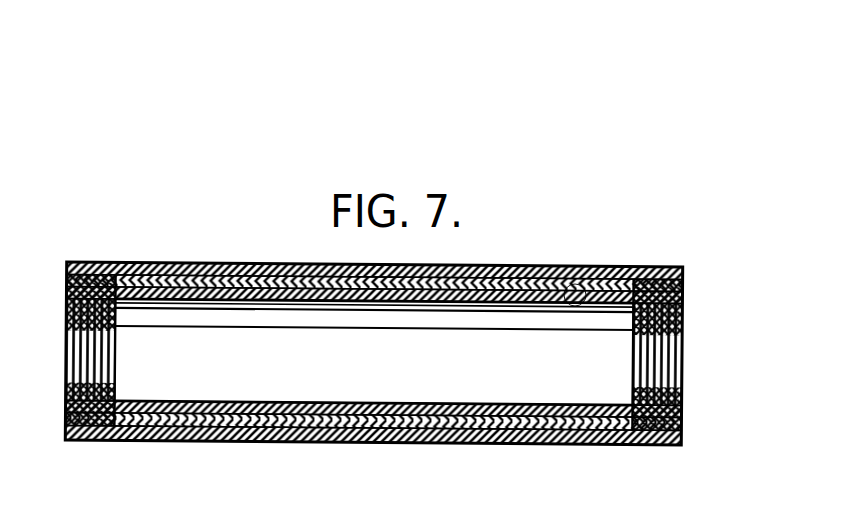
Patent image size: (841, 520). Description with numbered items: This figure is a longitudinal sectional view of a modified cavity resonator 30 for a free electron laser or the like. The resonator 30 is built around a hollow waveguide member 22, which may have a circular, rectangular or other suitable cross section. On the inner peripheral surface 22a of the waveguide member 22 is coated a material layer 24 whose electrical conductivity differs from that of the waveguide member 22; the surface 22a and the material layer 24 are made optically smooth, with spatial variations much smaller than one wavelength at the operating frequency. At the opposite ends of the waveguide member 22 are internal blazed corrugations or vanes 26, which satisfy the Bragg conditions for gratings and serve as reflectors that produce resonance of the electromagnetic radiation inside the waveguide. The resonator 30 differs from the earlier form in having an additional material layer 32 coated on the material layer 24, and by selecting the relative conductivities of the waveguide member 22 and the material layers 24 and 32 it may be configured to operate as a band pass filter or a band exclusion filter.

The modified cavity resonator 30 is at (272, 243).
The hollow waveguide member 22 is at (178, 264).
The inner peripheral surface 22a is at (430, 297).
The material layer 24 is at (327, 300).
The blazed corrugations or vanes 26 is at (78, 264).
The additional material layer 32 is at (566, 284).